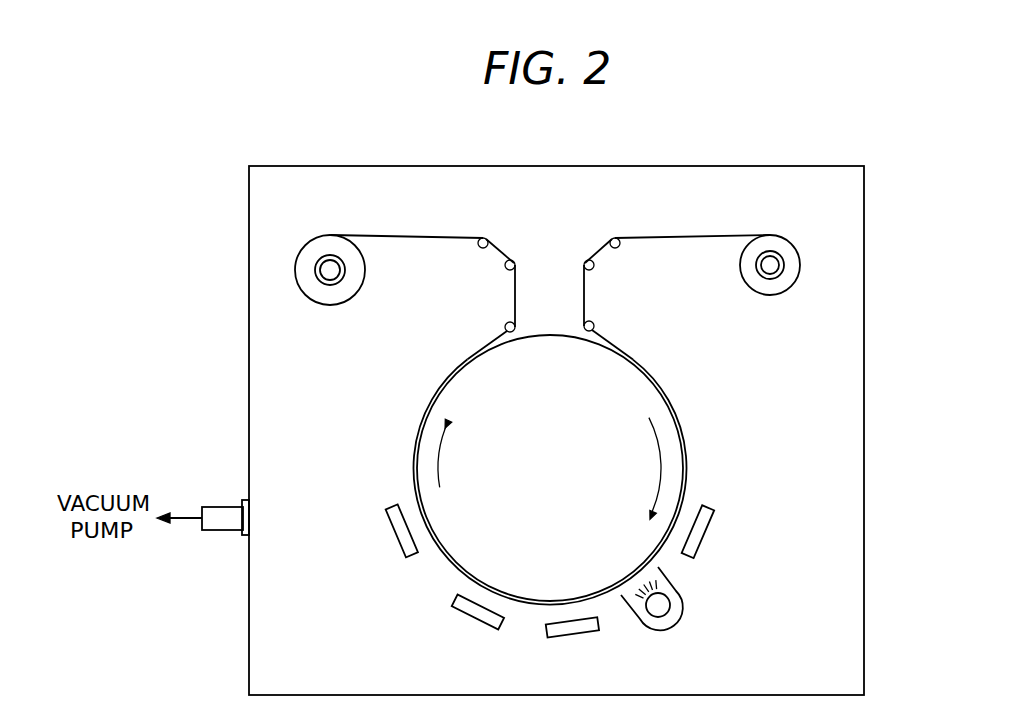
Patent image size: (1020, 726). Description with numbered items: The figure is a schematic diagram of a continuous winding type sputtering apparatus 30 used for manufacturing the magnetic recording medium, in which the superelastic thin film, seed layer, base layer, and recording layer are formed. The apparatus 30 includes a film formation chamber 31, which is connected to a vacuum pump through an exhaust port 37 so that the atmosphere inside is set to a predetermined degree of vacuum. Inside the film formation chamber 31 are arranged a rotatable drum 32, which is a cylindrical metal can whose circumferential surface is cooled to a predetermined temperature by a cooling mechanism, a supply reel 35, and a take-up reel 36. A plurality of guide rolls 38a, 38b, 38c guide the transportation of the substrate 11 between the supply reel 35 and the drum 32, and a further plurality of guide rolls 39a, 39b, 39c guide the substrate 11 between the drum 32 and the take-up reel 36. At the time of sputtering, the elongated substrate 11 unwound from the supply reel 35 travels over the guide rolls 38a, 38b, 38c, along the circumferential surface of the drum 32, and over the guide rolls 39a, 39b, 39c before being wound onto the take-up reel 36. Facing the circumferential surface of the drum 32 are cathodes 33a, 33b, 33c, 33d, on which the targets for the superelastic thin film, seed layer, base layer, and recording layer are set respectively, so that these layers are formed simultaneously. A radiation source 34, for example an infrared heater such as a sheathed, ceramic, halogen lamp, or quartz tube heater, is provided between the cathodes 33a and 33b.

The sputtering apparatus 30 is at (784, 120).
The film formation chamber 31 is at (249, 295).
The drum 32 is at (445, 396).
The cathode 33a is at (712, 528).
The cathode 33b is at (573, 638).
The cathode 33c is at (472, 617).
The cathode 33d is at (393, 540).
The radiation source 34 is at (683, 610).
The supply reel 35 is at (791, 247).
The take-up reel 36 is at (313, 253).
The exhaust port 37 is at (214, 531).
The guide roll 38a is at (622, 246).
The guide roll 38b is at (596, 268).
The guide roll 38c is at (597, 327).
The guide roll 39a is at (504, 328).
The guide roll 39b is at (505, 268).
The guide roll 39c is at (478, 246).
The substrate 11 is at (688, 234).